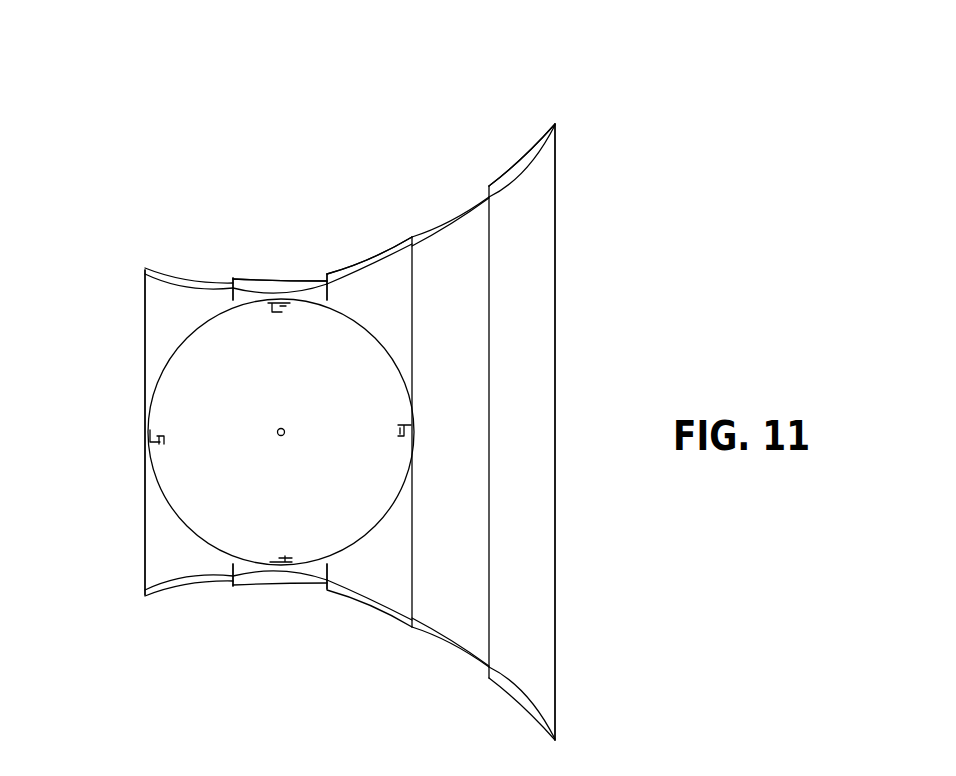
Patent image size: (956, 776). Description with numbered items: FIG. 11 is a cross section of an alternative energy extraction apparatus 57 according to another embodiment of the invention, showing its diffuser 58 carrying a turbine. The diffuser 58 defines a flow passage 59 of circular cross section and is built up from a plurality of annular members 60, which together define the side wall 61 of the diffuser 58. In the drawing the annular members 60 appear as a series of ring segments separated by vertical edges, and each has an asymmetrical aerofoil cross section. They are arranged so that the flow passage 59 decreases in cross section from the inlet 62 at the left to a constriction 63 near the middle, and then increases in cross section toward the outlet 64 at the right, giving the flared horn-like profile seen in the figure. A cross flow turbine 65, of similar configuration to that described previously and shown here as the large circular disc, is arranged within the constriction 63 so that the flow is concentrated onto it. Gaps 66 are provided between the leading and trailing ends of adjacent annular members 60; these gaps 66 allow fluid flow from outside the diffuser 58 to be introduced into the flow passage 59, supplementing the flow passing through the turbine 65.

The energy extraction apparatus 57 is at (622, 104).
The diffuser 58 is at (375, 242).
The flow passage 59 is at (178, 320).
The annular members 60 is at (250, 282).
The side wall 61 is at (488, 160).
The inlet 62 is at (143, 447).
The constriction 63 is at (287, 250).
The outlet 64 is at (584, 452).
The cross flow turbine 65 is at (196, 500).
The gaps 66 is at (229, 588).